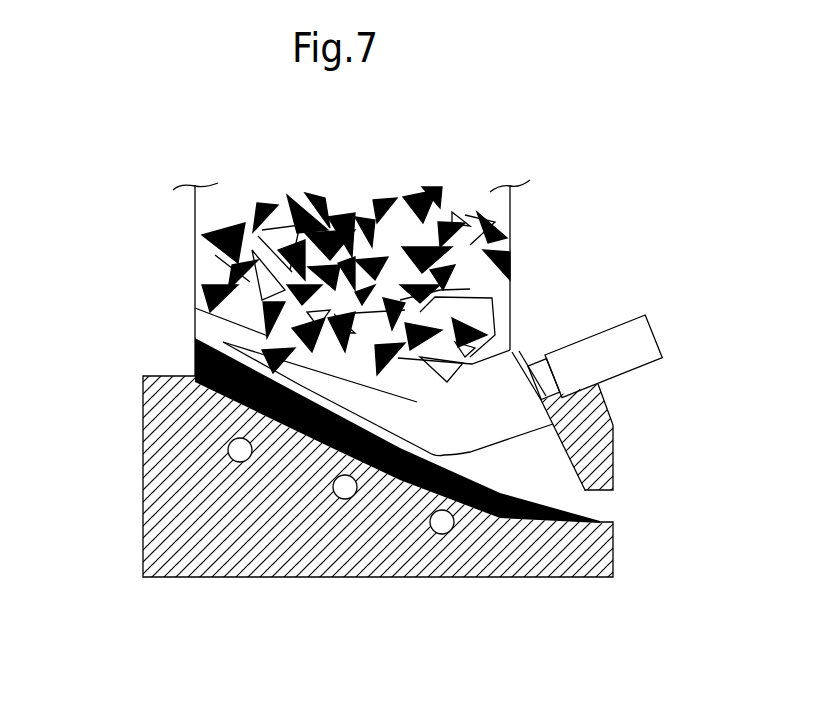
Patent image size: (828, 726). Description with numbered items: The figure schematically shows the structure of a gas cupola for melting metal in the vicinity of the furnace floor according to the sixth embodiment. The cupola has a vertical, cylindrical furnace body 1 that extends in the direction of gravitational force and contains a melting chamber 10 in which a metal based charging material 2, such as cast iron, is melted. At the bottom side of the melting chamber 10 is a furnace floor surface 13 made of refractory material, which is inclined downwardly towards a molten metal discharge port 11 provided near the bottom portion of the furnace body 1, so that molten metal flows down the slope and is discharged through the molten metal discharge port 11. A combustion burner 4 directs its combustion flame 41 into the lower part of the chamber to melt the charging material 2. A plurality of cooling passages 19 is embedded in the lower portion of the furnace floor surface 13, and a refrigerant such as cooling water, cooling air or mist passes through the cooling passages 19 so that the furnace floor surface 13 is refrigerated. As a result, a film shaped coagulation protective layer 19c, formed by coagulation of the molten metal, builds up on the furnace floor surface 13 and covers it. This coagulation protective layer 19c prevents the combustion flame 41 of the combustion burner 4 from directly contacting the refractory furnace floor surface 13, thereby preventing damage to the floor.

The furnace body 1 is at (195, 237).
The charging material 2 is at (415, 195).
The combustion burner 4 is at (605, 357).
The melting chamber 10 is at (210, 212).
The molten metal discharge port 11 is at (595, 503).
The furnace floor surface 13 is at (327, 448).
The cooling passages 19 is at (228, 450).
The coagulation protective layer 19c is at (200, 395).
The combustion flame 41 is at (467, 432).